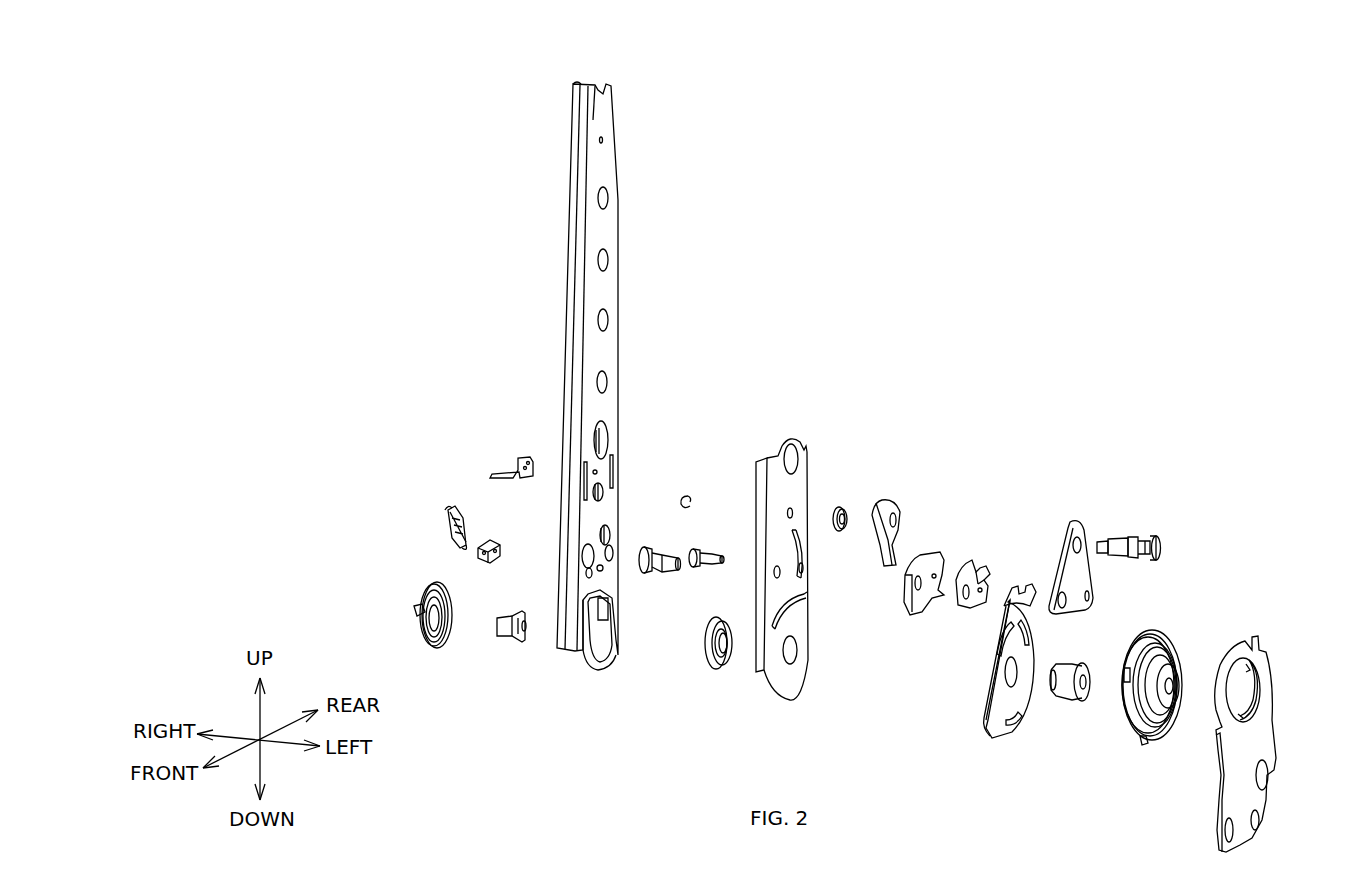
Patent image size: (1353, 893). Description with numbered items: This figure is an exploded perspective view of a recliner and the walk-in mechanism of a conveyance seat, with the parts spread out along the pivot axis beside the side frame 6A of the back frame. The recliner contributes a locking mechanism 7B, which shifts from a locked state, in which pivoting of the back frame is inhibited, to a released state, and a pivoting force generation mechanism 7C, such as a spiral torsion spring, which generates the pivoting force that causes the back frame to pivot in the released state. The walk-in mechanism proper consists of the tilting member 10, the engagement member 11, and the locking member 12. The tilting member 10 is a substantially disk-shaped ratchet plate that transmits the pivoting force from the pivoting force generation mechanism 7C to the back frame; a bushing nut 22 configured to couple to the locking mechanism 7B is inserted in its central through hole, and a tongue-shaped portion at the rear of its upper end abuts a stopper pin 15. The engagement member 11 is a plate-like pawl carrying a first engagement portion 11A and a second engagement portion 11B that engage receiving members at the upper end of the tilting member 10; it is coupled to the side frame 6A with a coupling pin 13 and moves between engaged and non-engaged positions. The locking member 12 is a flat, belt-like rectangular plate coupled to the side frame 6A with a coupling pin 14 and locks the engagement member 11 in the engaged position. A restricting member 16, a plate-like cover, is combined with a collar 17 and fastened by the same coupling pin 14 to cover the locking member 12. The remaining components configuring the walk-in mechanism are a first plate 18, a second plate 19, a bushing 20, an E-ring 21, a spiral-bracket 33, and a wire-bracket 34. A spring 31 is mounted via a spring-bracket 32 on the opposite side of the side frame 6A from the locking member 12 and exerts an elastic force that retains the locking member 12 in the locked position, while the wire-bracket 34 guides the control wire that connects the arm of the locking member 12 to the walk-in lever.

The side frame 6A is at (605, 229).
The locking mechanism 7B is at (1160, 632).
The pivoting force generation mechanism 7C is at (422, 590).
The tilting member 10 is at (998, 720).
The engagement member 11 is at (944, 622).
The first engagement portion 11A is at (968, 558).
The second engagement portion 11B is at (928, 552).
The locking member 12 is at (890, 503).
The coupling pin 13 is at (657, 578).
The coupling pin 14 is at (1161, 548).
The stopper pin 15 is at (706, 546).
The restricting member 16 is at (1068, 556).
The collar 17 is at (841, 506).
The first plate 18 is at (798, 462).
The second plate 19 is at (1268, 724).
The bushing 20 is at (710, 648).
The E-ring 21 is at (684, 494).
The bushing nut 22 is at (1066, 708).
The spring 31 is at (448, 522).
The spring-bracket 32 is at (496, 542).
The spiral-bracket 33 is at (510, 645).
The wire-bracket 34 is at (524, 458).